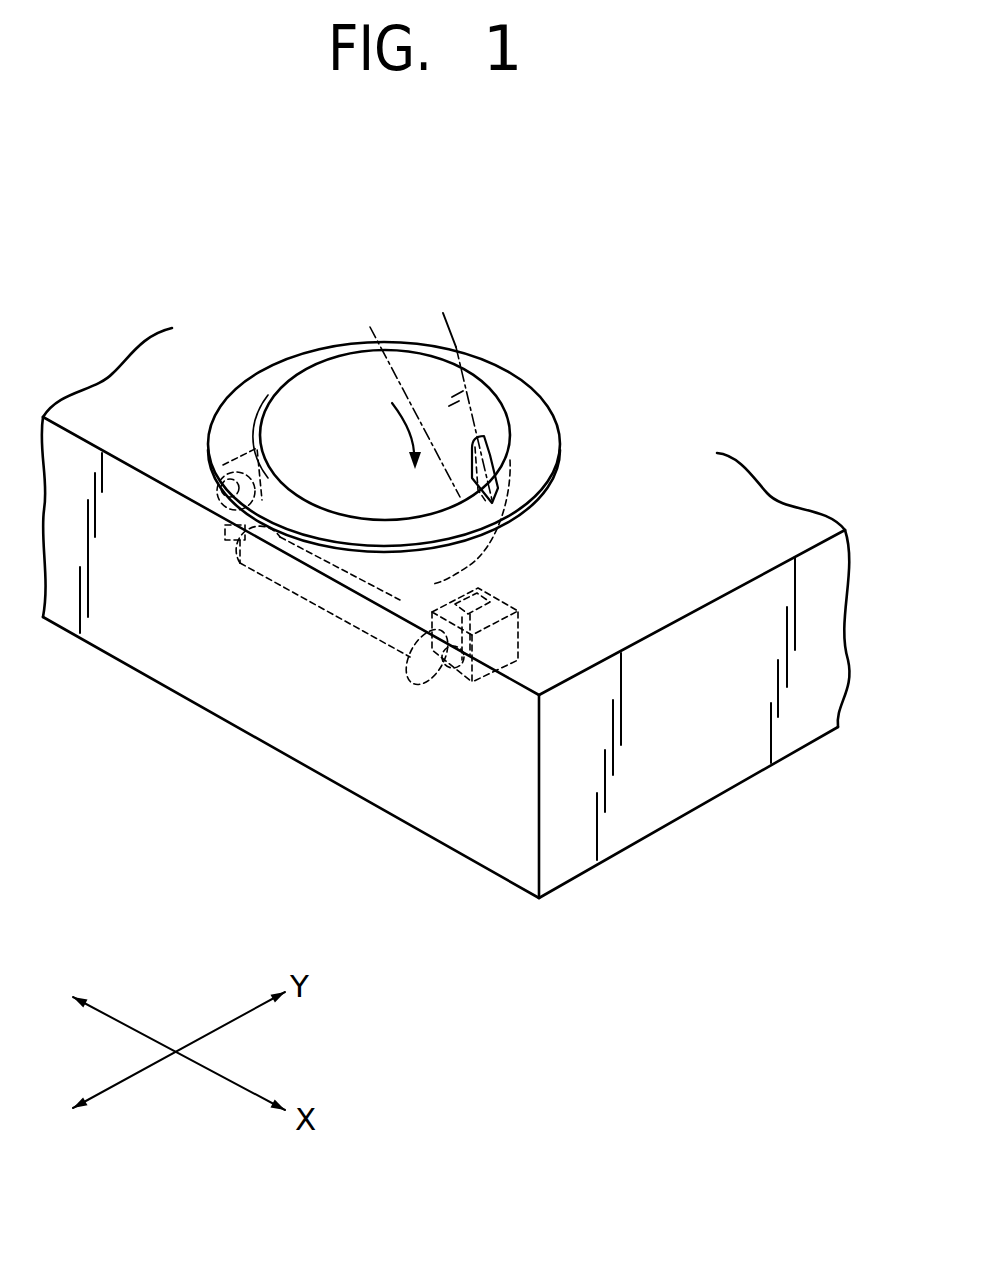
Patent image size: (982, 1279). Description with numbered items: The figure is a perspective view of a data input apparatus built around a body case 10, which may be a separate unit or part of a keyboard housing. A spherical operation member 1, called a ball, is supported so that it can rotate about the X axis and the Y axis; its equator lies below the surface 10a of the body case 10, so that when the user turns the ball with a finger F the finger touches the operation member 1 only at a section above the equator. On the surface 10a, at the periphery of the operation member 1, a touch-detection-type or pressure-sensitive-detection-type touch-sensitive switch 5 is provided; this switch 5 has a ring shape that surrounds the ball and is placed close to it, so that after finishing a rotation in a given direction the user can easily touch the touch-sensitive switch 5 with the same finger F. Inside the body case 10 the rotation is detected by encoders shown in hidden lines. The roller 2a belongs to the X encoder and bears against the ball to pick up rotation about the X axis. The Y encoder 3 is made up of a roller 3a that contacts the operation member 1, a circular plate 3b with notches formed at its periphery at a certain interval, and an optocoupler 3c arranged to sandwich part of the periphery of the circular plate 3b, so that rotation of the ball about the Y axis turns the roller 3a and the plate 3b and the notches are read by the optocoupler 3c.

The spherical operation member 1 is at (355, 383).
The roller 2a is at (240, 457).
The Y encoder 3 is at (423, 646).
The roller 3a is at (400, 593).
The circular plate 3b is at (438, 680).
The optocoupler 3c is at (520, 627).
The touch-sensitive switch 5 is at (560, 441).
The body case 10 is at (456, 613).
The surface 10a is at (733, 530).
The finger F is at (448, 328).